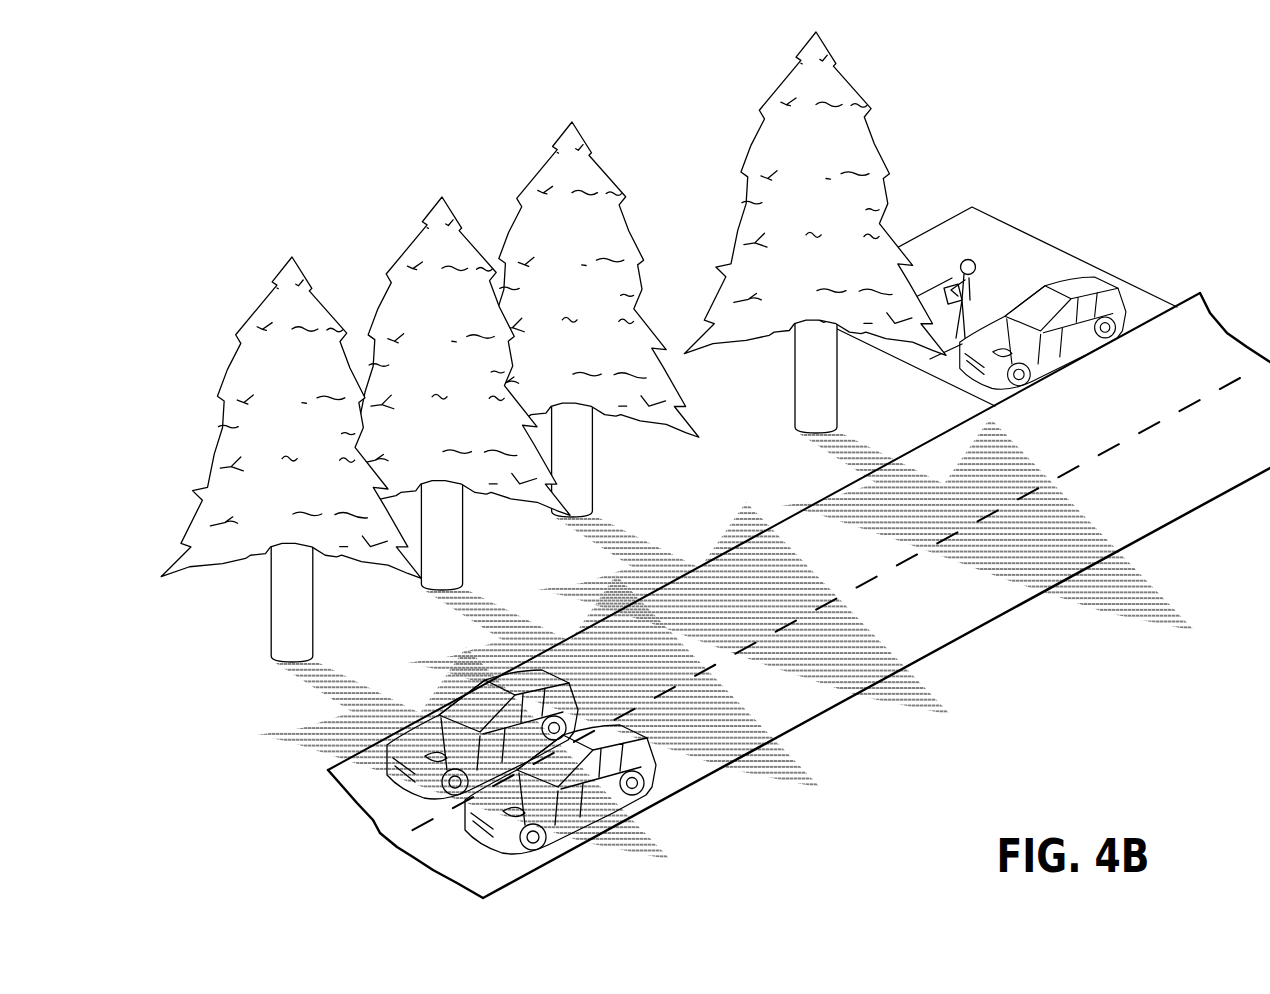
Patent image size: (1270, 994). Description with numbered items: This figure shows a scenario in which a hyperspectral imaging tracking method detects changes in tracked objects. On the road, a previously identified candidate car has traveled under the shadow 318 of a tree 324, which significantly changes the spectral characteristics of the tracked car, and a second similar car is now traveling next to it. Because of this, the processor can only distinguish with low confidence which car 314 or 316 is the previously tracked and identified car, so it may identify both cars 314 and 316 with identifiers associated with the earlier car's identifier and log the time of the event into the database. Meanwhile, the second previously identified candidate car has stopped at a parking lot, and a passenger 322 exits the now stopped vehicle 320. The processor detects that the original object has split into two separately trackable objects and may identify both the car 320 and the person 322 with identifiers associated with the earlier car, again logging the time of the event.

The car 314 is at (663, 767).
The car 316 is at (405, 798).
The shadow 318 is at (648, 845).
The vehicle 320 is at (1055, 270).
The passenger 322 is at (956, 256).
The tree 324 is at (267, 313).